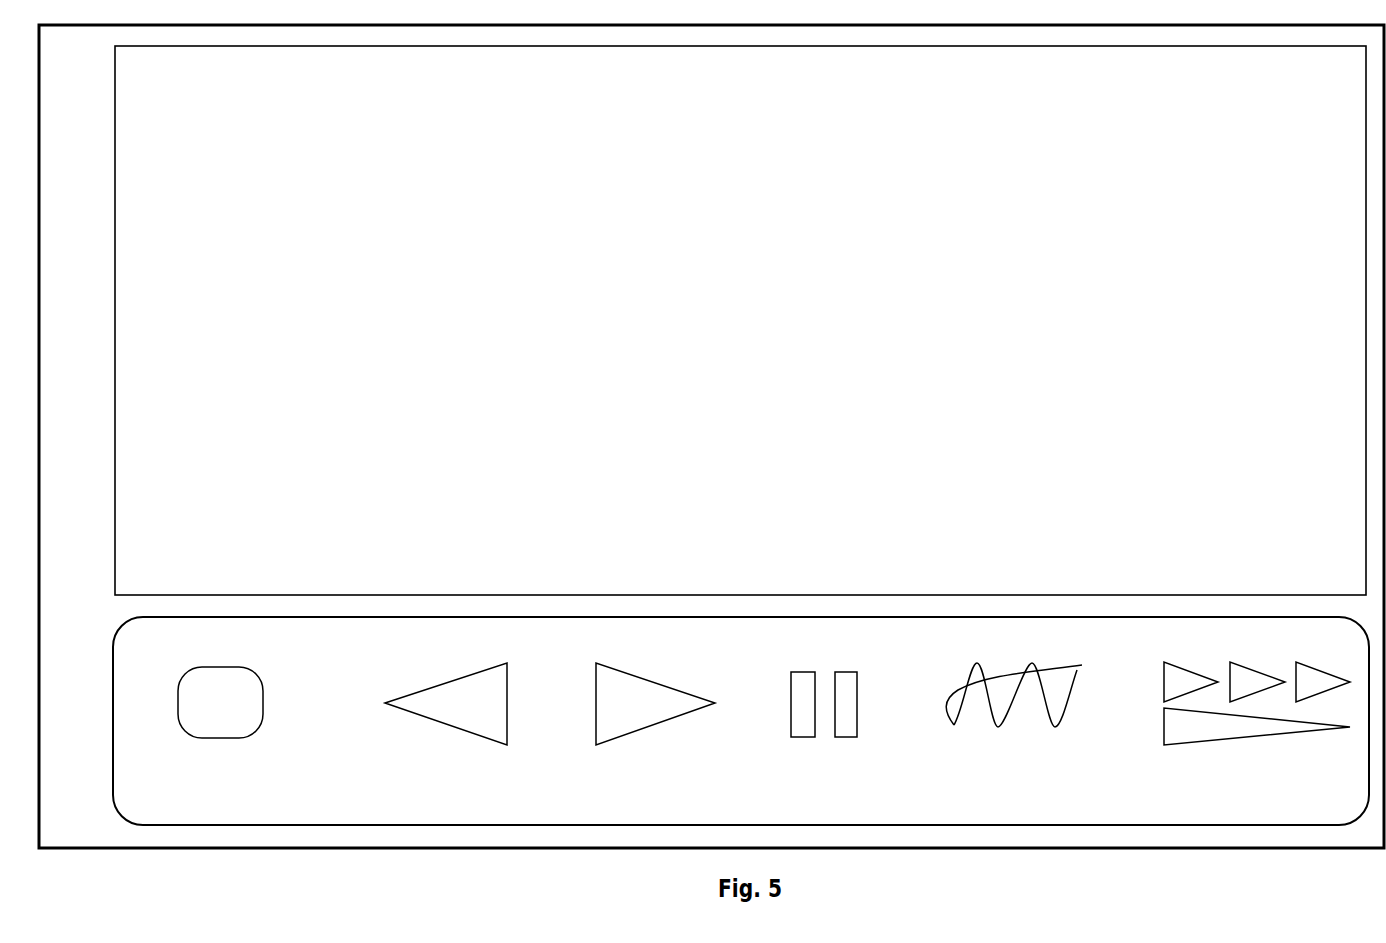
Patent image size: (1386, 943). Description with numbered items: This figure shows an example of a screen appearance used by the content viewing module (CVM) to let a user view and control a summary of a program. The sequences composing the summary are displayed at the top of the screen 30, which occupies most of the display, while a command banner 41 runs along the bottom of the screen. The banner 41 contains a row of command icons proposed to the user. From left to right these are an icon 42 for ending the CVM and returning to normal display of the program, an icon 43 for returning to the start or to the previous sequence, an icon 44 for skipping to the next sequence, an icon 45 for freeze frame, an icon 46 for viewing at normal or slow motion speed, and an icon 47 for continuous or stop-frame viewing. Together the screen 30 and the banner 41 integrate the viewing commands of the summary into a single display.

The screen 30 is at (740, 320).
The command banner 41 is at (110, 655).
The end of CVM icon 42 is at (263, 682).
The previous sequence icon 43 is at (462, 675).
The next sequence icon 44 is at (667, 682).
The freeze frame icon 45 is at (807, 722).
The normal/slow motion speed icon 46 is at (1016, 717).
The continuous/stop-frame viewing icon 47 is at (1256, 717).